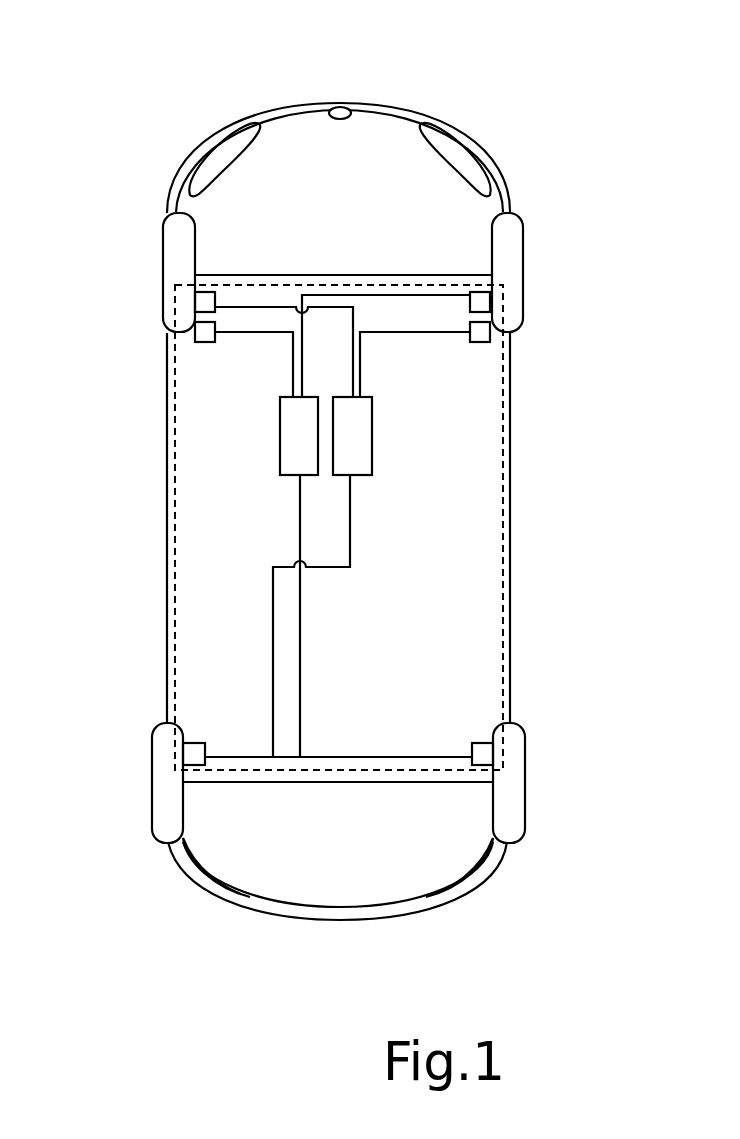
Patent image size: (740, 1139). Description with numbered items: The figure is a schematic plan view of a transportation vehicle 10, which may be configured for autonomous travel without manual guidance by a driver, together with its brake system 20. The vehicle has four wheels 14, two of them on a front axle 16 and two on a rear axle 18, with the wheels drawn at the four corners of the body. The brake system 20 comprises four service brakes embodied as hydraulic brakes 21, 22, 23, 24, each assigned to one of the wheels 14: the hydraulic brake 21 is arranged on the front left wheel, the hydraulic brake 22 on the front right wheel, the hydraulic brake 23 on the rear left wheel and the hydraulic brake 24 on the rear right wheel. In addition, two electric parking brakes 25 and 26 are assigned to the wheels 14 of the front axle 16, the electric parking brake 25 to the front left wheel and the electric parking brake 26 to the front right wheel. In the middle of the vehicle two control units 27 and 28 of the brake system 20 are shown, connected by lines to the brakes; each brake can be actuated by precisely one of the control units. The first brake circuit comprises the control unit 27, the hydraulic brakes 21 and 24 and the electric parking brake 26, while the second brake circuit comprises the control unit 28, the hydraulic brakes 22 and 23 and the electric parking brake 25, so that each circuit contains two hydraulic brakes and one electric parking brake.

The transportation vehicle 10 is at (199, 109).
The wheels 14 is at (180, 245).
The front axle 16 is at (365, 275).
The rear axle 18 is at (260, 783).
The brake system 20 is at (160, 568).
The hydraulic brake 21 is at (206, 331).
The hydraulic brake 22 is at (483, 332).
The hydraulic brake 23 is at (196, 758).
The hydraulic brake 24 is at (497, 755).
The electric parking brake 25 is at (206, 302).
The electric parking brake 26 is at (482, 305).
The control unit 27 is at (297, 445).
The control unit 28 is at (352, 435).